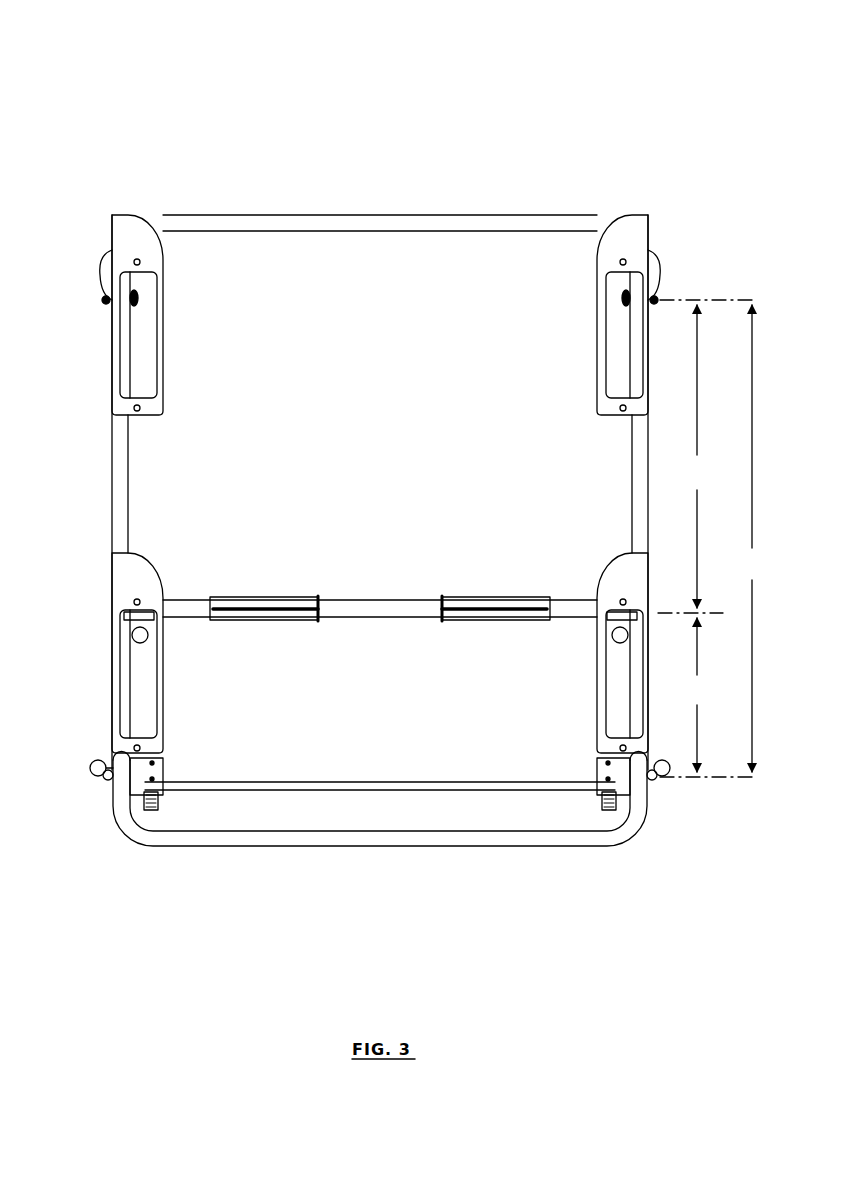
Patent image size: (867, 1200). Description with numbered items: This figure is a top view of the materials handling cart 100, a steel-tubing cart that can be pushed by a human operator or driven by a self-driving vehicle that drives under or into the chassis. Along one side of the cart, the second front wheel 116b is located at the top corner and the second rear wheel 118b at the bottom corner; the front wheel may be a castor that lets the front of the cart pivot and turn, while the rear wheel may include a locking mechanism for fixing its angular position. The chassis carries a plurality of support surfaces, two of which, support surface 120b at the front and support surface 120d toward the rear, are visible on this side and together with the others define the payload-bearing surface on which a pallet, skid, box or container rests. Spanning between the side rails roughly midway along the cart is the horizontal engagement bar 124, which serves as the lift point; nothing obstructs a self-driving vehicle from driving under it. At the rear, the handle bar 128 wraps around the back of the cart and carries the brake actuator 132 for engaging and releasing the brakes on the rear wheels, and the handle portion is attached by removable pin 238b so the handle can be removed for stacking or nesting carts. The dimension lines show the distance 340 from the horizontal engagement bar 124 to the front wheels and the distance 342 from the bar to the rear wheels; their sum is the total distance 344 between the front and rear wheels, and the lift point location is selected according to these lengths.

The materials handling cart 100 is at (480, 65).
The second front wheel 116b is at (107, 300).
The second rear wheel 118b is at (108, 808).
The support surface 120b is at (152, 258).
The support surface 120d is at (153, 746).
The horizontal engagement bar 124 is at (343, 608).
The handle bar 128 is at (378, 835).
The brake actuator 132 is at (395, 790).
The removable pin 238b is at (92, 766).
The distance from the horizontal engagement bar to the front wheels 340 is at (705, 456).
The distance from the horizontal engagement bar to the rear wheels 342 is at (706, 697).
The total distance between the front wheels and the rear wheels 344 is at (753, 538).